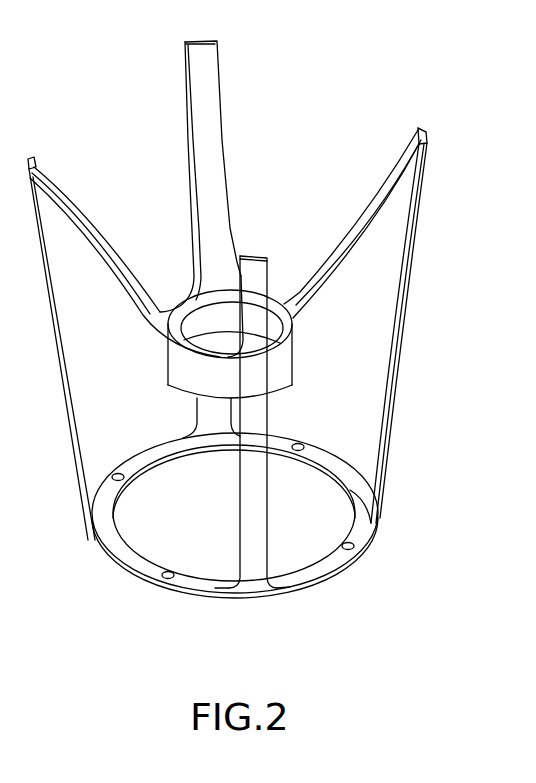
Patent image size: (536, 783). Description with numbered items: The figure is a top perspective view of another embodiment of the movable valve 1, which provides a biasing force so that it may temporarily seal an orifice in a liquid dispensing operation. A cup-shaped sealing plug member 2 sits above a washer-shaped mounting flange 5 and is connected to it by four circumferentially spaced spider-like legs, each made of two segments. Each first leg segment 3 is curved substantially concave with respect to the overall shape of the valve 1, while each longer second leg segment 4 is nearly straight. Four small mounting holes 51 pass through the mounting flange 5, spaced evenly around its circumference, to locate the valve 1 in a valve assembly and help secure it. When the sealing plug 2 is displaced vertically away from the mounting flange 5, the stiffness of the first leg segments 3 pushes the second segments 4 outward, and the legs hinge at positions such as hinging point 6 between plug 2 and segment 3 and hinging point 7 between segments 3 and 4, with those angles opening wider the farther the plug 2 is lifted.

The valve 1 is at (269, 338).
The cup-shaped sealing plug member 2 is at (173, 368).
The first leg segment 3 is at (375, 207).
The second leg segment 4 is at (394, 331).
The mounting flange 5 is at (302, 572).
The mounting holes 51 is at (168, 578).
The hinging point 6 is at (253, 566).
The hinging point 7 is at (424, 128).